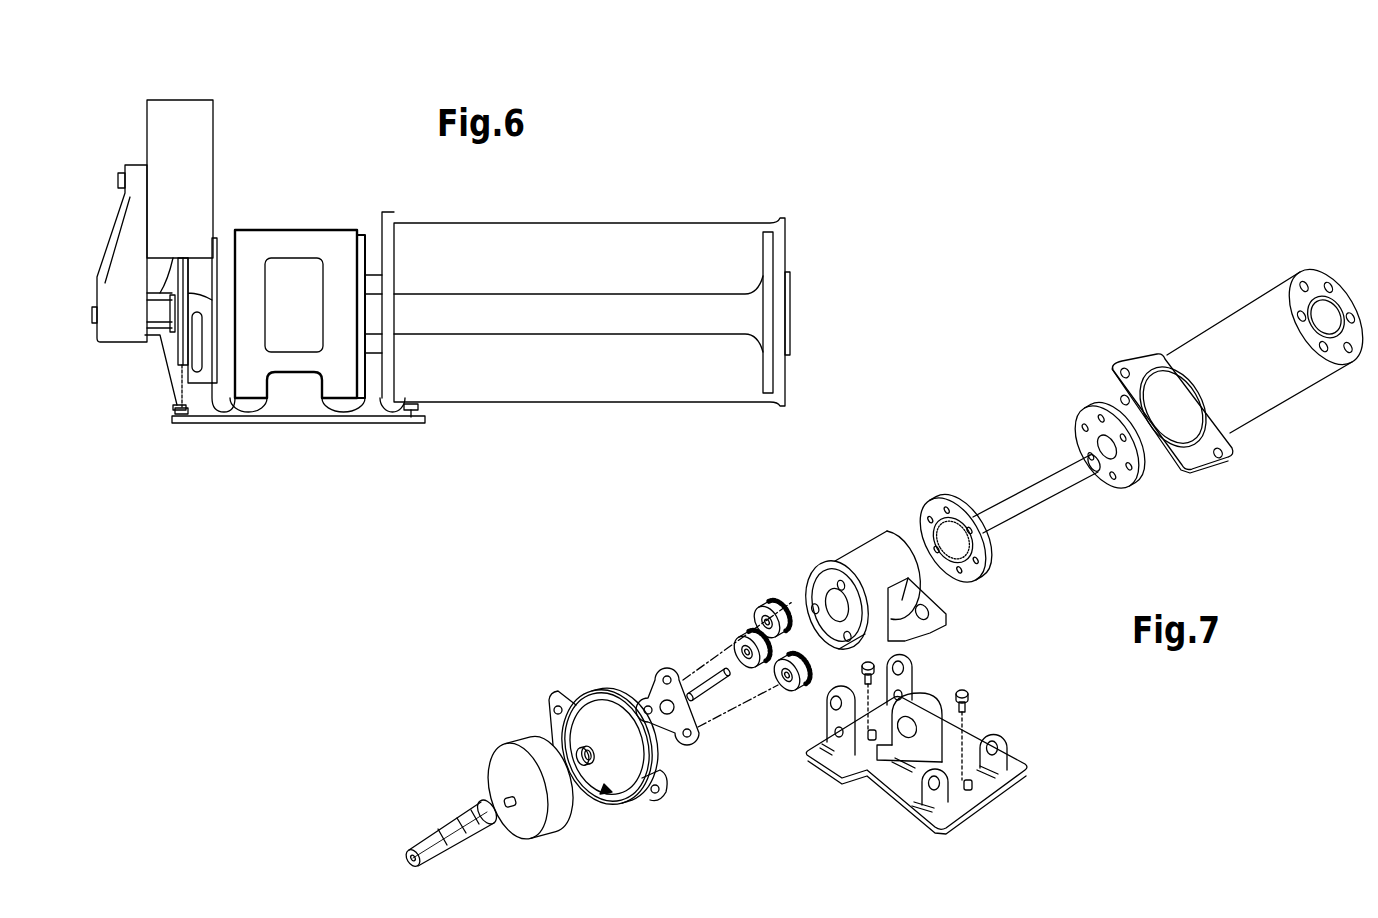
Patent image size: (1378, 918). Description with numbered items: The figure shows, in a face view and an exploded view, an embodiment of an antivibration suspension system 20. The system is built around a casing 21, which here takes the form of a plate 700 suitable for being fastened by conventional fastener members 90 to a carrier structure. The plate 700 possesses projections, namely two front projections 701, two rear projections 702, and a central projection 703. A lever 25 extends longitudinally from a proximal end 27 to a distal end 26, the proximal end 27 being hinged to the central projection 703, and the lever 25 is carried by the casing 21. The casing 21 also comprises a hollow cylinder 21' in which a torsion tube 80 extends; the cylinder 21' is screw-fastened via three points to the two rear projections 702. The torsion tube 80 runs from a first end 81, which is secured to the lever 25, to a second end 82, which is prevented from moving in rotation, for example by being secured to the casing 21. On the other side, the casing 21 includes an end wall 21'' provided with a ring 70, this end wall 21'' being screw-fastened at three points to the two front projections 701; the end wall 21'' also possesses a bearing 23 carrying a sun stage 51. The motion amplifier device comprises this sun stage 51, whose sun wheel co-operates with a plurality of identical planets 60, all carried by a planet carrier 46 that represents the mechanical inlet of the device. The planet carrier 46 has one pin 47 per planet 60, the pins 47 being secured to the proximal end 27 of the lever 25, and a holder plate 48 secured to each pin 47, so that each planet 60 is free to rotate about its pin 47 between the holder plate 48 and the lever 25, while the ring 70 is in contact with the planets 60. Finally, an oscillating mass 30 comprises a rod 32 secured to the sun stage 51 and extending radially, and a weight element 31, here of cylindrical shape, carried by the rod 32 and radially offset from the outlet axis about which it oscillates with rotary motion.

In FIG. 7, the antivibration suspension system 20 is at (501, 741).
In FIG. 7, the casing 21 is at (1172, 343).
In FIG. 6, the hollow cylinder 21' is at (585, 289).
In FIG. 7, the hollow cylinder 21' is at (1272, 364).
In FIG. 7, the end wall 21'' is at (588, 707).
In FIG. 7, the bearing 23 is at (548, 719).
In FIG. 6, the lever 25 is at (332, 246).
In FIG. 7, the lever 25 is at (921, 559).
In FIG. 7, the distal end 26 is at (952, 609).
In FIG. 7, the proximal end 27 is at (820, 560).
In FIG. 7, the oscillating mass 30 is at (457, 796).
In FIG. 6, the weight element 31 is at (197, 108).
In FIG. 7, the weight element 31 is at (496, 787).
In FIG. 6, the rod 32 is at (118, 232).
In FIG. 7, the rod 32 is at (418, 799).
In FIG. 7, the planet carrier 46 is at (703, 657).
In FIG. 7, the pin 47 is at (698, 686).
In FIG. 7, the holder plate 48 is at (650, 694).
In FIG. 7, the sun stage 51 is at (711, 700).
In FIG. 7, the planets 60 is at (768, 604).
In FIG. 7, the ring 70 is at (593, 795).
In FIG. 7, the torsion tube 80 is at (1080, 478).
In FIG. 6, the first end 81 is at (362, 240).
In FIG. 7, the first end 81 is at (955, 497).
In FIG. 7, the second end 82 is at (1140, 473).
In FIG. 6, the fastener member 90 is at (182, 422).
In FIG. 7, the fastener member 90 is at (845, 669).
In FIG. 6, the plate 700 is at (255, 426).
In FIG. 7, the plate 700 is at (943, 747).
In FIG. 7, the front projections 701 is at (905, 805).
In FIG. 7, the rear projections 702 is at (913, 673).
In FIG. 7, the central projection 703 is at (944, 712).